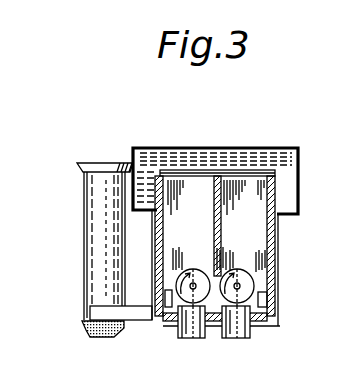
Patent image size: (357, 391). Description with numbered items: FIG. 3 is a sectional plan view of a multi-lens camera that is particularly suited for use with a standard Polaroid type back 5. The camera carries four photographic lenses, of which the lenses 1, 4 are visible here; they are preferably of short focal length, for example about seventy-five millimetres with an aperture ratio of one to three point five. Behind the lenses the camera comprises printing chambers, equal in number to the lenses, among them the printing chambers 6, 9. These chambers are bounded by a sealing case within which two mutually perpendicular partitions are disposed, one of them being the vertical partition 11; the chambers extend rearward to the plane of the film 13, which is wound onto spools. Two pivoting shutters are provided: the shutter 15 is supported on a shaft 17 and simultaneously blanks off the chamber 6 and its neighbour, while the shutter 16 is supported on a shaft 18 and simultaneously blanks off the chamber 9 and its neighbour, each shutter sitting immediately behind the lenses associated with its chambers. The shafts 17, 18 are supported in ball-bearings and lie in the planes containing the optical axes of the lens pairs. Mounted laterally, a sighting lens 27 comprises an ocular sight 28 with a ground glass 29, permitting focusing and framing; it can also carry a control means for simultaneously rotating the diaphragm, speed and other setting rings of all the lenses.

The photographic lens 1 is at (233, 335).
The photographic lens 4 is at (193, 333).
The standard Polaroid type back 5 is at (288, 188).
The printing chamber 6 is at (256, 253).
The printing chamber 9 is at (155, 249).
The vertical partition 11 is at (213, 194).
The film 13 is at (240, 172).
The shutter 15 is at (267, 300).
The shutter 16 is at (160, 318).
The shaft 17 is at (256, 270).
The shaft 18 is at (212, 274).
The sighting lens 27 is at (97, 338).
The ocular sight 28 is at (95, 176).
The ground glass 29 is at (100, 175).